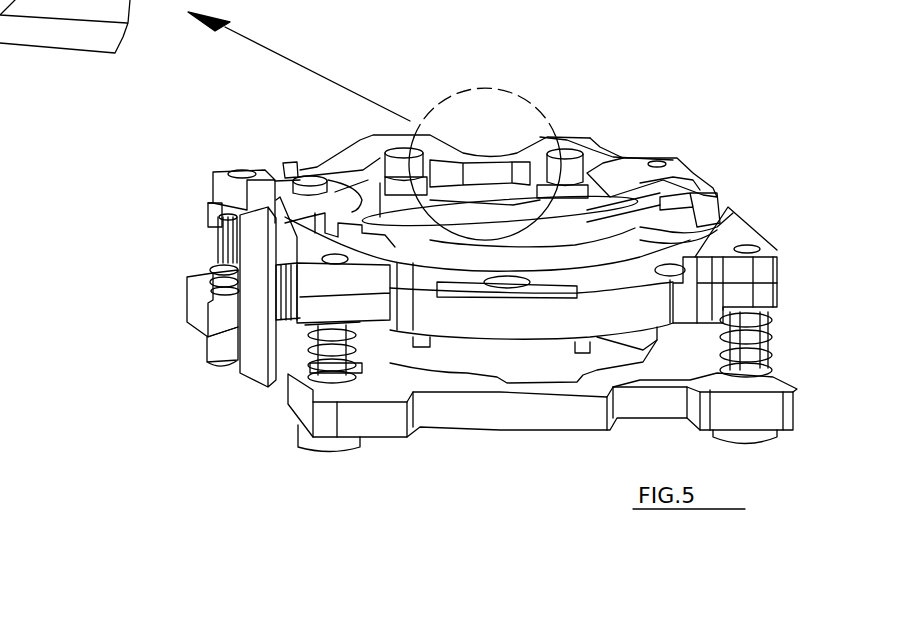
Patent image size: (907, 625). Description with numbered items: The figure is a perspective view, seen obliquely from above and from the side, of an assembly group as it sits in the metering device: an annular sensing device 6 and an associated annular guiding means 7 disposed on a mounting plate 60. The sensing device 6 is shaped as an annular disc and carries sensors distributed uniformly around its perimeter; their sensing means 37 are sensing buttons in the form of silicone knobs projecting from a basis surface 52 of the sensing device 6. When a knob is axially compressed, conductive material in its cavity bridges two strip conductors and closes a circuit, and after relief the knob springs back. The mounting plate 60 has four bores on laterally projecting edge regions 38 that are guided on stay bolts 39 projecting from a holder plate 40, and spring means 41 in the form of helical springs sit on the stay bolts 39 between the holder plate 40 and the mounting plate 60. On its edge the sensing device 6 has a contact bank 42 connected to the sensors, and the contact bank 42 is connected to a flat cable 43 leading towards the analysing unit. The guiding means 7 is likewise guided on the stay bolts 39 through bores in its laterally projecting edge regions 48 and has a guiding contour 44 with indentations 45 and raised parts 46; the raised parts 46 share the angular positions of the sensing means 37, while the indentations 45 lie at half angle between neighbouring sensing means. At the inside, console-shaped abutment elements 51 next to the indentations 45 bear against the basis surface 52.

The annular sensing device 6 is at (710, 185).
The annular guiding means 7 is at (562, 137).
The sensing means 37 is at (362, 137).
The laterally projecting edge regions 38 is at (777, 300).
The stay bolts 39 is at (333, 370).
The holder plate 40 is at (483, 415).
The spring means 41 is at (300, 376).
The contact bank 42 is at (210, 243).
The flat cable 43 is at (255, 340).
The guiding contour 44 is at (627, 157).
The indentations 45 is at (487, 137).
The raised parts 46 is at (717, 210).
The laterally projecting edge regions 48 is at (247, 170).
The abutment elements 51 is at (426, 133).
The basis surface 52 is at (455, 180).
The mounting plate 60 is at (478, 328).